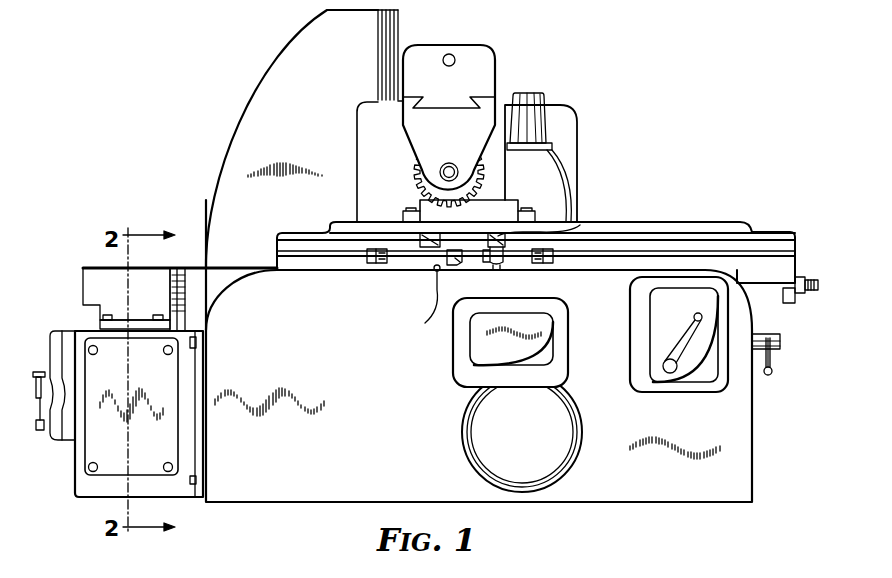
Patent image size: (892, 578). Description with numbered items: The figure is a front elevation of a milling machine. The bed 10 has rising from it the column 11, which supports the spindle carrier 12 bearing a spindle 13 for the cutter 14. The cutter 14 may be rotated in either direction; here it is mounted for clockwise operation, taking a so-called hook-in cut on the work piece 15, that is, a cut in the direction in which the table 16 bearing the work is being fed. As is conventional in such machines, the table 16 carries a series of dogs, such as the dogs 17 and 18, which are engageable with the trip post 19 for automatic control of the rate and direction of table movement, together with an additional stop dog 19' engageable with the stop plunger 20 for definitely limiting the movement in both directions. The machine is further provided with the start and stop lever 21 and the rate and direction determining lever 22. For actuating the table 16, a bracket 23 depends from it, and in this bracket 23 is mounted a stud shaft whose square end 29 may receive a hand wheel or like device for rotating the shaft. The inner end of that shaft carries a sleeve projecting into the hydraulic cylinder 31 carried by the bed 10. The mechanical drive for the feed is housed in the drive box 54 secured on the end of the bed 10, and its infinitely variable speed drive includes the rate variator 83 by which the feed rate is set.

The bed 10 is at (745, 478).
The column 11 is at (289, 55).
The spindle carrier 12 is at (503, 100).
The spindle 13 is at (449, 163).
The cutter 14 is at (483, 186).
The work piece 15 is at (500, 207).
The table 16 is at (707, 227).
The dog 17 is at (421, 236).
The dog 18 is at (375, 264).
The trip post 19 is at (569, 212).
The stop dog 19' is at (421, 303).
The stop plunger 20 is at (452, 266).
The start and stop lever 21 is at (680, 345).
The rate and direction determining lever 22 is at (769, 377).
The bracket 23 is at (787, 303).
The square end 29 is at (811, 275).
The hydraulic cylinder 31 is at (222, 274).
The drive box 54 is at (95, 489).
The rate variator 83 is at (33, 400).